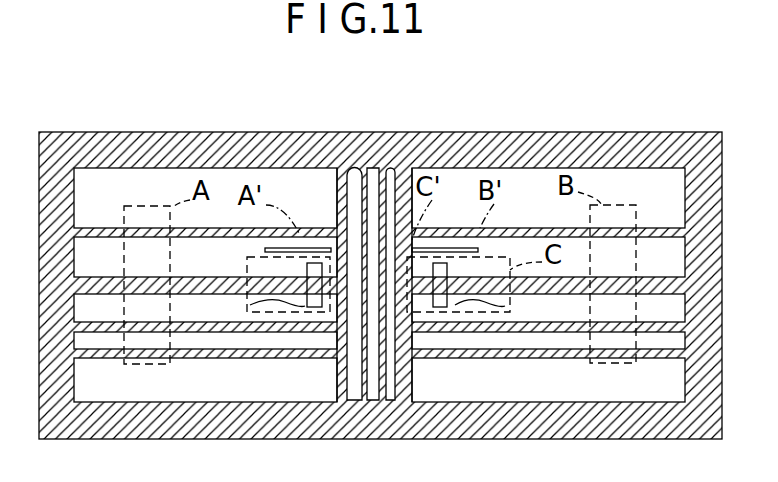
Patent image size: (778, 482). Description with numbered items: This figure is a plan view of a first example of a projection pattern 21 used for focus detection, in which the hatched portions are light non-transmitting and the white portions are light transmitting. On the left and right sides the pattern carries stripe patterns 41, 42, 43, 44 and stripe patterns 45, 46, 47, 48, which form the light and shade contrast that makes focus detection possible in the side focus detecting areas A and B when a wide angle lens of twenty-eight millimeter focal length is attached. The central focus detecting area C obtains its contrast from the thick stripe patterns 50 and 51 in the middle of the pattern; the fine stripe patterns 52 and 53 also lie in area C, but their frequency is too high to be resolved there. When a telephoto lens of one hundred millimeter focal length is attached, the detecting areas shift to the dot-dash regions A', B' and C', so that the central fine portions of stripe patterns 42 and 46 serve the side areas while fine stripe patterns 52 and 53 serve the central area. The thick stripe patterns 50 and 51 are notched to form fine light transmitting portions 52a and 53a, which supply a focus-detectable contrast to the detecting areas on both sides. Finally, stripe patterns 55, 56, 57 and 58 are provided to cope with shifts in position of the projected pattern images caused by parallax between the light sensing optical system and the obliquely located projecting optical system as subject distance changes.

The ink jet head body 21 is at (622, 132).
The stripe pattern 41 is at (103, 228).
The stripe pattern 42 is at (106, 277).
The stripe pattern 43 is at (108, 322).
The stripe pattern 44 is at (103, 358).
The stripe pattern 45 is at (653, 228).
The stripe pattern 46 is at (658, 277).
The stripe pattern 47 is at (663, 308).
The stripe pattern 48 is at (658, 358).
The thick stripe pattern 50 is at (337, 372).
The thick stripe pattern 51 is at (412, 386).
The fine stripe pattern 52 is at (356, 168).
The fine light transmitting portion 52a is at (318, 290).
The fine stripe pattern 53 is at (392, 168).
The fine light transmitting portion 53a is at (440, 263).
The stripe pattern 55 is at (268, 250).
The stripe pattern 56 is at (250, 310).
The stripe pattern 57 is at (480, 262).
The stripe pattern 58 is at (505, 308).